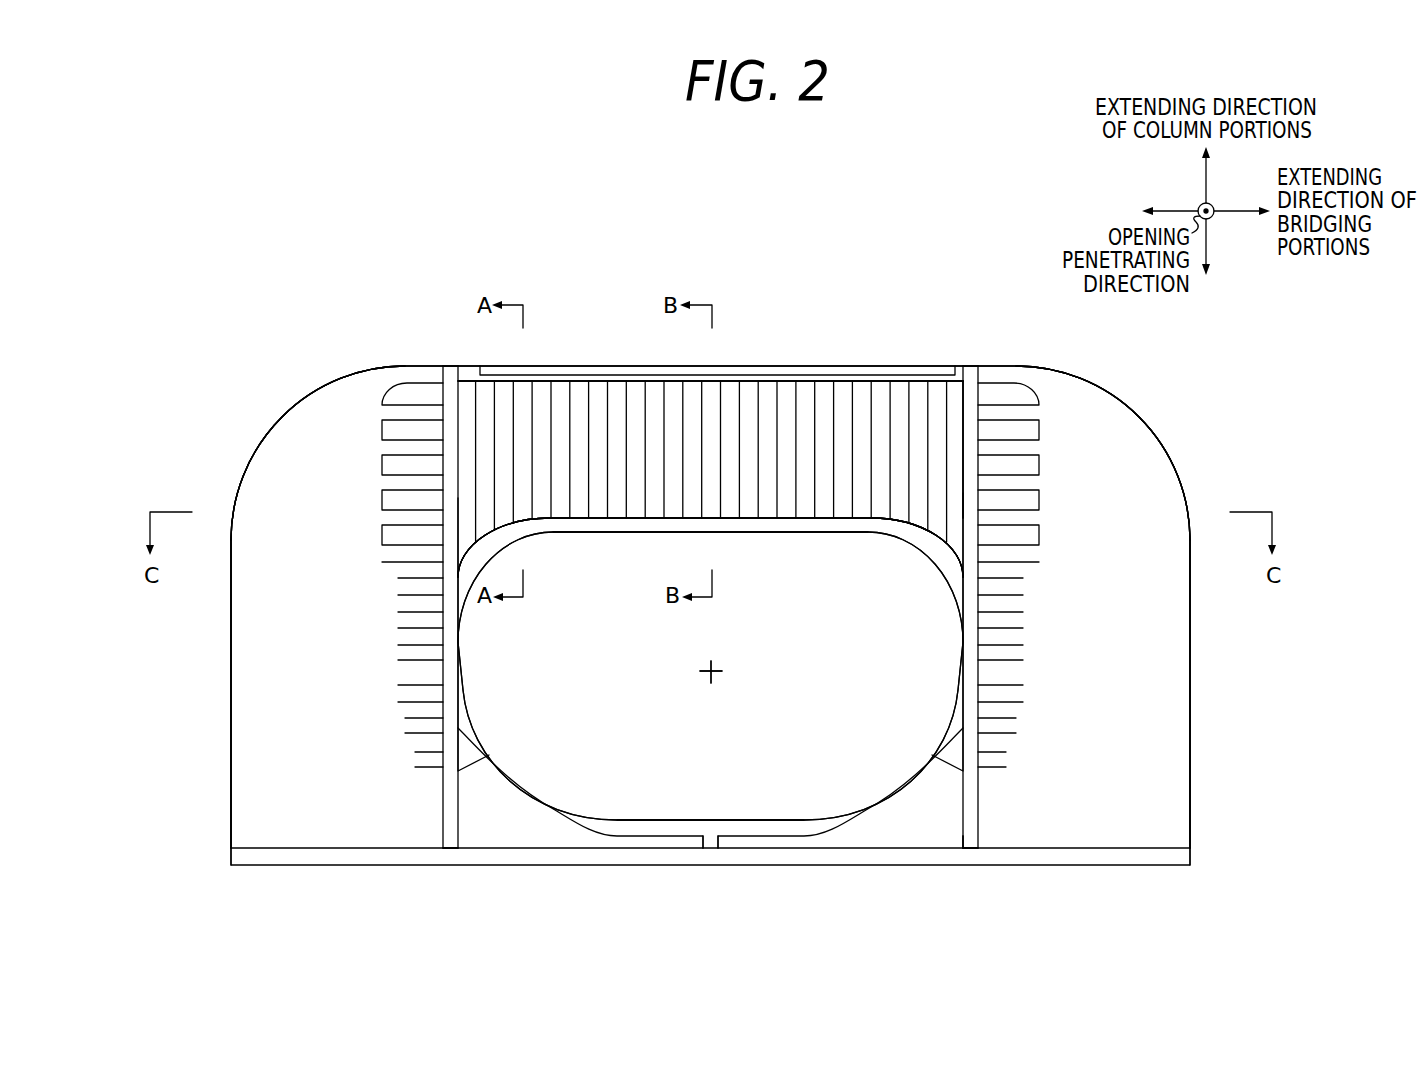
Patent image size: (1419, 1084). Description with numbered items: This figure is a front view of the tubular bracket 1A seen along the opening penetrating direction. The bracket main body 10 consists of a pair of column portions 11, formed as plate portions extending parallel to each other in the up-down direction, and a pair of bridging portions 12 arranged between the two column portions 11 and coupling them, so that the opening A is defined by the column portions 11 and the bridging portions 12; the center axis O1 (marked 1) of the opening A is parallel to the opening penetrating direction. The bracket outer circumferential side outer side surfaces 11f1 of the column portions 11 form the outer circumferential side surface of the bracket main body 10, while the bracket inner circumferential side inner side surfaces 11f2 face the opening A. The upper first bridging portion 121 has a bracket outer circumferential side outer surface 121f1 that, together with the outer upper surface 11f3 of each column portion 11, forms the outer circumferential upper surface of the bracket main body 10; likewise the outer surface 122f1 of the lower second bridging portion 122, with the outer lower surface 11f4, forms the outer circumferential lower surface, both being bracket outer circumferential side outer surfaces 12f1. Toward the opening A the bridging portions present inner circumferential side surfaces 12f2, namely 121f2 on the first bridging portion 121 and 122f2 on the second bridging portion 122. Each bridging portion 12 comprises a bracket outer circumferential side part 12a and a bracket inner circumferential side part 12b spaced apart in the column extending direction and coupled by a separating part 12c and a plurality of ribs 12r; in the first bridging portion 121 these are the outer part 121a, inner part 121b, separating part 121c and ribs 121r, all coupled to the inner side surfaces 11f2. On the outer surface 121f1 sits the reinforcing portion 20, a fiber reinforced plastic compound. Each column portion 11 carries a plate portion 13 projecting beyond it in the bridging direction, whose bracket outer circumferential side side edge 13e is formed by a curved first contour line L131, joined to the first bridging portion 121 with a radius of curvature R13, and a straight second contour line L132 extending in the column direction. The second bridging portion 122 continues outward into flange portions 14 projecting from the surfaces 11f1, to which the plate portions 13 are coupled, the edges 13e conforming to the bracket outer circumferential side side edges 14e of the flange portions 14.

The bracket 1A is at (428, 265).
The bracket main body 10 is at (763, 832).
The column portion 11 is at (450, 793).
The bracket outer circumferential side outer side surface 11f1 is at (443, 822).
The bracket inner circumferential side inner side surface 11f2 is at (458, 498).
The bracket outer circumferential side outer upper surface 11f3 is at (448, 366).
The bracket outer circumferential side outer lower surface 11f4 is at (446, 866).
The bridging portion 12 is at (738, 604).
The first bridging portion 121 is at (617, 437).
The second bridging portion 122 is at (628, 844).
The bracket outer circumferential side part 12a is at (767, 382).
The bracket outer circumferential side part 121a is at (710, 324).
The bracket inner circumferential side part 12b is at (790, 535).
The bracket inner circumferential side part 121b is at (710, 557).
The separating part 12c is at (880, 500).
The separating part 121c is at (890, 562).
The ribs 12r is at (712, 498).
The ribs 121r is at (625, 567).
The bracket outer circumferential side outer surface 12f1 is at (962, 381).
The bracket outer circumferential side outer surface 121f1 is at (961, 391).
The bracket outer circumferential side outer surface 122f1 is at (889, 890).
The inner face of bridging portion facing opening 12f2 is at (643, 535).
The inner face of upper bridging portion 121f2 is at (696, 579).
The inner face of lower bridging portion 122f2 is at (710, 788).
The plate portion 13 is at (272, 656).
The bracket outer circumferential side side edge 13e is at (266, 446).
The first contour line L131 is at (711, 453).
The second contour line L132 is at (710, 694).
The flange portion 14 is at (1110, 866).
The bracket outer circumferential side side edge 14e is at (231, 858).
The reinforcing portion 20 is at (833, 370).
The radius of curvature R13 is at (341, 480).
The opening A is at (793, 725).
The center axis O1 is at (707, 672).
The center point 1 is at (711, 672).